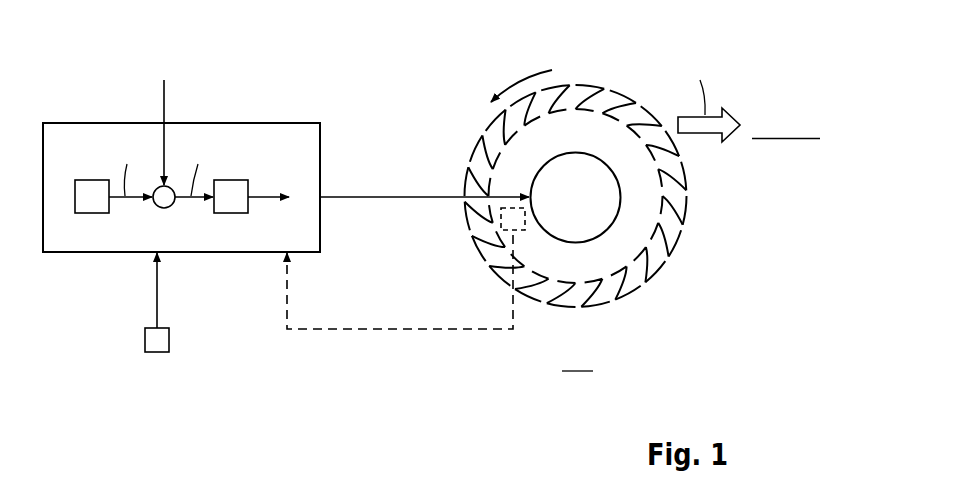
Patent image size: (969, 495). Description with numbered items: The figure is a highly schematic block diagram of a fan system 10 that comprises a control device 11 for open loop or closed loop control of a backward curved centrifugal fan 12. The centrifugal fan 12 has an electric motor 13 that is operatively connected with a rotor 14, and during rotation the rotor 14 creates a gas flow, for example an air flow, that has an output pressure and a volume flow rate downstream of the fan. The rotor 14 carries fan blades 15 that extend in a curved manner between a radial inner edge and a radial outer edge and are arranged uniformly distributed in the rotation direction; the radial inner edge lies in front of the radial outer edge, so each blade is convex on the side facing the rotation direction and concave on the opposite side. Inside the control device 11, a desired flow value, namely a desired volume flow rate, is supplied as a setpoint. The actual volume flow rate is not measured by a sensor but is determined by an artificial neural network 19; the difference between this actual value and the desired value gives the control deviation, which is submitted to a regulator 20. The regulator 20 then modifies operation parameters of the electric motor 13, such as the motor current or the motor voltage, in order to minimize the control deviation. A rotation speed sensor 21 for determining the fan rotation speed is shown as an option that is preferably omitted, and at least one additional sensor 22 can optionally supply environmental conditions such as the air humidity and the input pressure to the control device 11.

The fan system 10 is at (766, 60).
The control device 11 is at (320, 132).
The backward curved centrifugal fan 12 is at (612, 71).
The electric motor 13 is at (617, 215).
The rotor 14 is at (686, 188).
The fan blades 15 is at (627, 293).
The artificial neural network 19 is at (83, 180).
The regulator 20 is at (237, 180).
The rotation speed sensor 21 is at (502, 220).
The additional sensor 22 is at (150, 352).